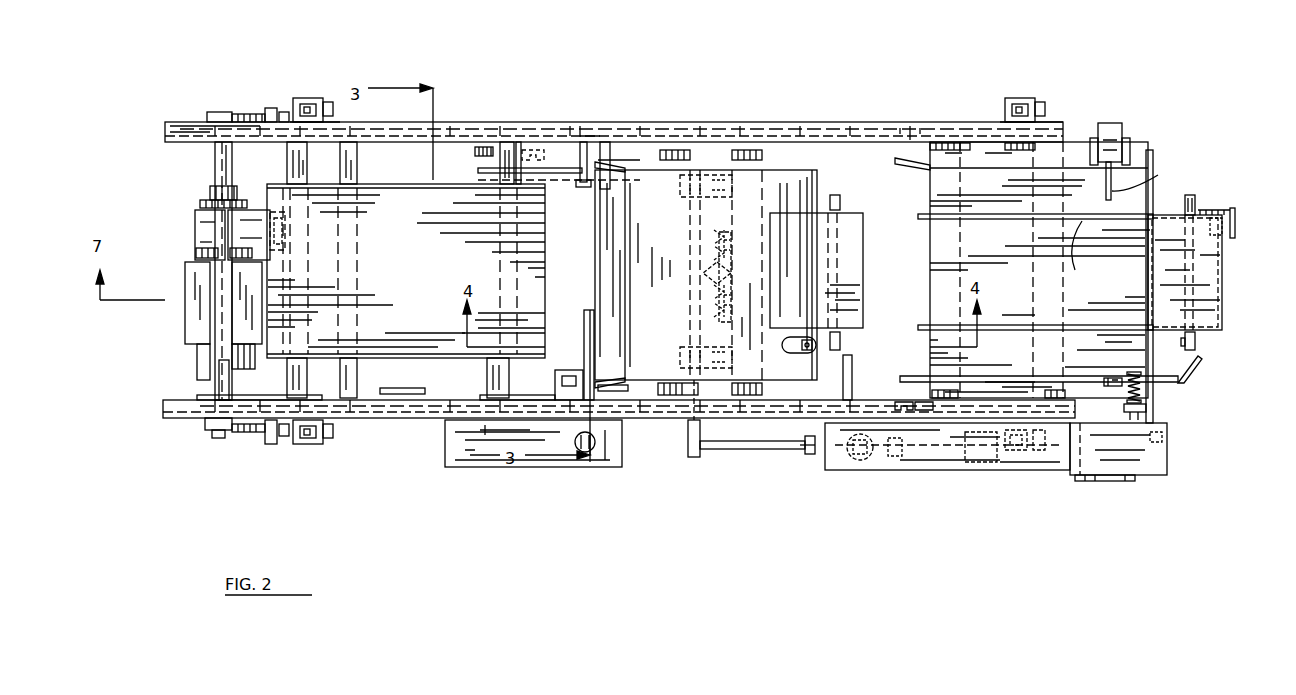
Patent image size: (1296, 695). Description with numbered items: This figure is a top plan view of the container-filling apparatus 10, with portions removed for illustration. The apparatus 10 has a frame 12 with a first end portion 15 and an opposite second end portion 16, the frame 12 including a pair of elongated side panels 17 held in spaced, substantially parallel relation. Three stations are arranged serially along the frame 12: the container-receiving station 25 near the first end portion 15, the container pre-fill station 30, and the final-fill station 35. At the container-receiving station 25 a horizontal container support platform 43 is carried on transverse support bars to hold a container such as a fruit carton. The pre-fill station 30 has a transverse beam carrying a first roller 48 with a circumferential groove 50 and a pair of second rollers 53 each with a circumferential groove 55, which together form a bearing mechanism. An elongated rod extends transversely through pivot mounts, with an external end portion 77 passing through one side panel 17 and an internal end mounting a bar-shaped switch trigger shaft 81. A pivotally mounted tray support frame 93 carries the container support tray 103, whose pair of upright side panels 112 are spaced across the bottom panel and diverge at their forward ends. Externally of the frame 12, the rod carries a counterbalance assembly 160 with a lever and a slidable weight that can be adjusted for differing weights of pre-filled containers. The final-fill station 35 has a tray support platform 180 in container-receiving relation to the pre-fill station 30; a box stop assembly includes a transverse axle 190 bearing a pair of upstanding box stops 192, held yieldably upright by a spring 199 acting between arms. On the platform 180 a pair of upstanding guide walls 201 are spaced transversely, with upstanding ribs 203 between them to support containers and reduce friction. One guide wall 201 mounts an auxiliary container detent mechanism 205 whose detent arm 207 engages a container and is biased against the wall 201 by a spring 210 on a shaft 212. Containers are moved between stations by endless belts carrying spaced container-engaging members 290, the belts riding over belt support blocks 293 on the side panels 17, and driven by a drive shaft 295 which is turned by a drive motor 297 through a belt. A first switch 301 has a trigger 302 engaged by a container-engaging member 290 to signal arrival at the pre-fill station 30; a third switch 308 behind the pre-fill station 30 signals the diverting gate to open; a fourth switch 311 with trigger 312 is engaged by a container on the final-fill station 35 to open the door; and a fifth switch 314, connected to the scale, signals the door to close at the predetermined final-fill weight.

The apparatus 10 is at (634, 78).
The frame 12 is at (185, 121).
The first end portion 15 is at (168, 130).
The second end portion 16 is at (1140, 150).
The side panels 17 is at (385, 420).
The container-receiving station 25 is at (404, 238).
The container pre-fill station 30 is at (655, 180).
The final-fill station 35 is at (985, 186).
The container support platform 43 is at (442, 208).
The first roller 48 is at (712, 240).
The groove 50 is at (727, 225).
The second rollers 53 is at (712, 297).
The circumferential groove 55 is at (720, 318).
The external end portion 77 is at (690, 444).
The switch trigger shaft 81 is at (535, 168).
The tray support frame 93 is at (855, 240).
The container support tray 103 is at (640, 258).
The side panels 112 is at (655, 168).
The counterbalance assembly 160 is at (745, 448).
The tray support platform 180 is at (1128, 200).
The axle 190 is at (1196, 197).
The box stops 192 is at (842, 203).
The spring 199 is at (1228, 222).
The guide walls 201 is at (1063, 165).
The ribs 203 is at (1052, 320).
The auxiliary container detent mechanism 205 is at (1180, 383).
The detent arm 207 is at (1202, 365).
The spring 210 is at (1126, 406).
The shaft 212 is at (1142, 388).
The container-engaging members 290 is at (220, 375).
The belt support blocks 293 is at (692, 156).
The drive shaft 295 is at (222, 228).
The drive motor 297 is at (196, 275).
The first switch 301 is at (562, 374).
The trigger 302 is at (588, 345).
The third switch 308 is at (812, 350).
The fourth switch 311 is at (1110, 130).
The trigger 312 is at (1128, 198).
The fifth switch 314 is at (1167, 436).